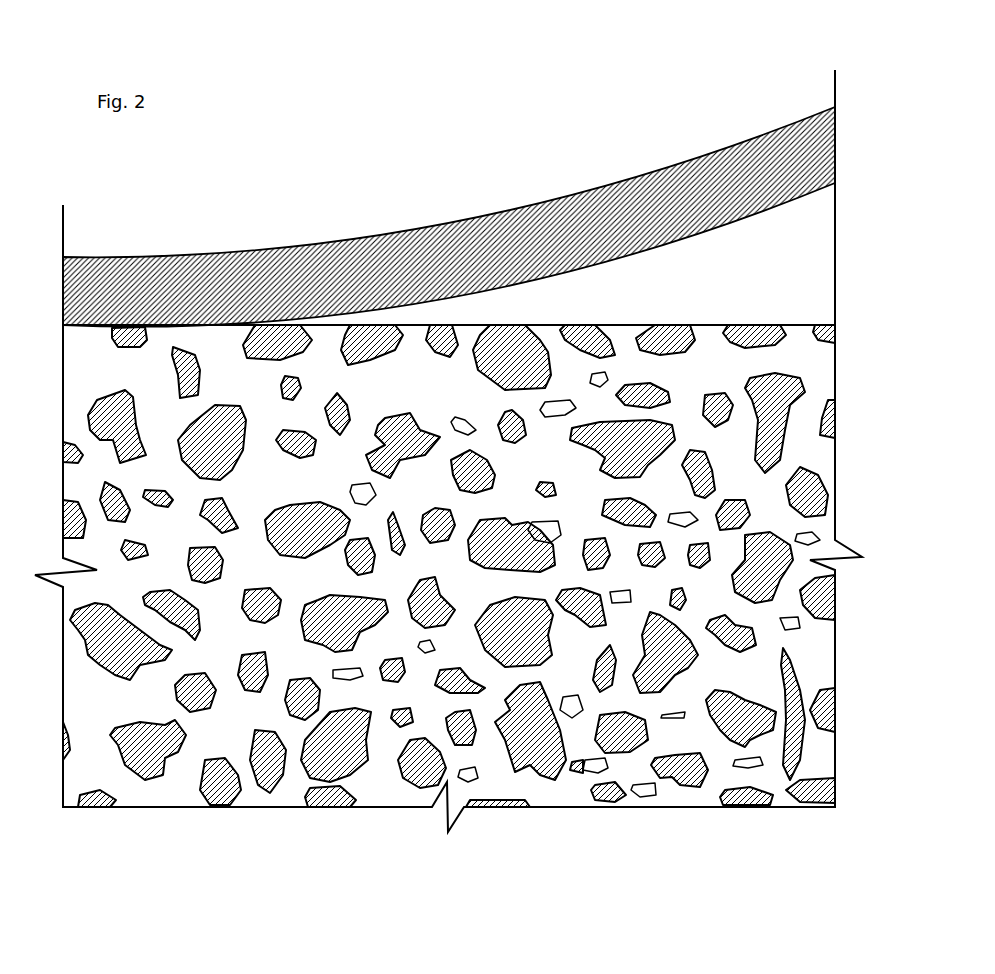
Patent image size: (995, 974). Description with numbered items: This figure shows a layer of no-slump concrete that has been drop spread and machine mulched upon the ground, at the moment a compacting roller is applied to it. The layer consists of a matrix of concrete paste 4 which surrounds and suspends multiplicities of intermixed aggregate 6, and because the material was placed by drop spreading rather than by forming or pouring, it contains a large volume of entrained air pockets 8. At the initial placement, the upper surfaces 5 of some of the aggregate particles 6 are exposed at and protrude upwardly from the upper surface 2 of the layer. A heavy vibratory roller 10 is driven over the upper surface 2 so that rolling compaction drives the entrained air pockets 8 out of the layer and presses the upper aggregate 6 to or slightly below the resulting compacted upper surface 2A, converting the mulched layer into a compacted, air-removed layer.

The upper surface 2 is at (607, 325).
The upper surface of compacted layer 2A is at (160, 327).
The matrix of concrete paste 4 is at (210, 737).
The upper surfaces of aggregate particles 5 is at (747, 325).
The aggregate 6 is at (750, 343).
The entrained air pockets 8 is at (590, 767).
The vibratory roller 10 is at (673, 220).